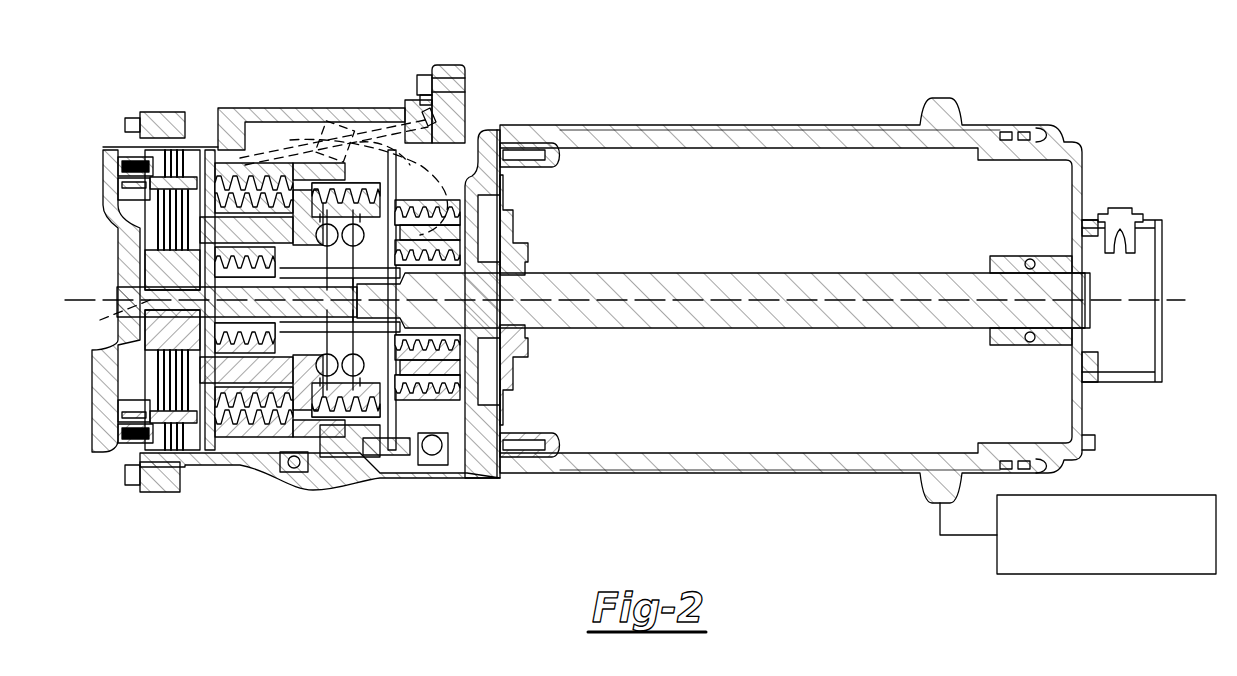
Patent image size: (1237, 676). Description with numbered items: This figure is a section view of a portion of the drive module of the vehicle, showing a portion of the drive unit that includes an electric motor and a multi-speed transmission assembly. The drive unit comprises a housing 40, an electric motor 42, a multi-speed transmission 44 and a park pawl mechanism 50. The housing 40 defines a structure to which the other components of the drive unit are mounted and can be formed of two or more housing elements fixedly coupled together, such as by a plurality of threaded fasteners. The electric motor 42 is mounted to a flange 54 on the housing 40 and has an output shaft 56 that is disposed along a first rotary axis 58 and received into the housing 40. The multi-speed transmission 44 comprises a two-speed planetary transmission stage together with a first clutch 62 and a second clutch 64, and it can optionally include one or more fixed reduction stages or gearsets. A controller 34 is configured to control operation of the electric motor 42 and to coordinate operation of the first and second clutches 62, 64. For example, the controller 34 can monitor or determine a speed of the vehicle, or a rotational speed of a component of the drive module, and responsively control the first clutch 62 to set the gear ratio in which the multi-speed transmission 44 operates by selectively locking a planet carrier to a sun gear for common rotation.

The controller 34 is at (1035, 576).
The housing 40 is at (540, 138).
The electric motor 42 is at (815, 172).
The multi-speed transmission 44 is at (236, 152).
The park pawl mechanism 50 is at (453, 170).
The flange 54 is at (488, 128).
The output shaft 56 is at (818, 282).
The first rotary axis 58 is at (880, 302).
The first clutch 62 is at (153, 226).
The second clutch 64 is at (147, 166).